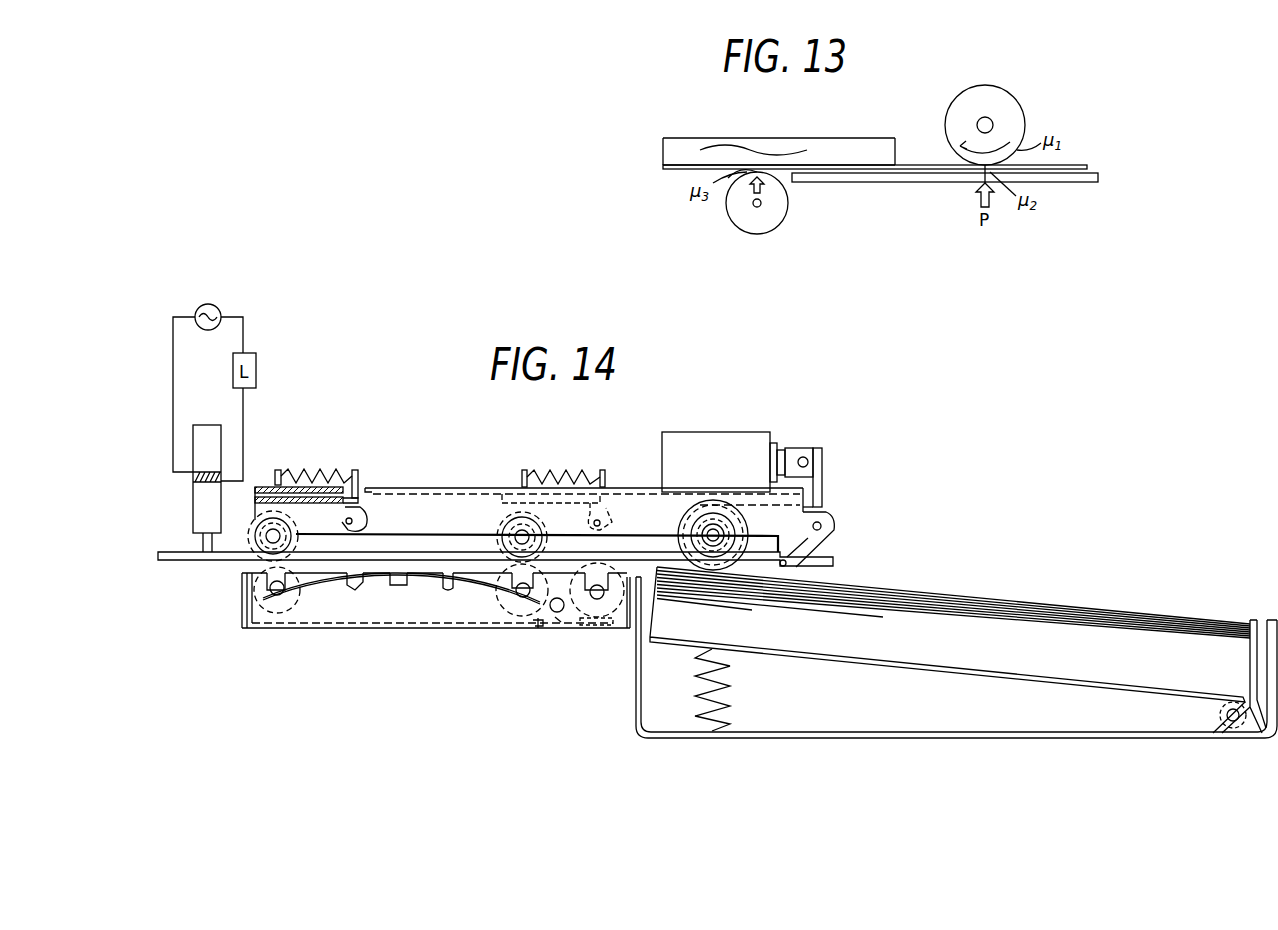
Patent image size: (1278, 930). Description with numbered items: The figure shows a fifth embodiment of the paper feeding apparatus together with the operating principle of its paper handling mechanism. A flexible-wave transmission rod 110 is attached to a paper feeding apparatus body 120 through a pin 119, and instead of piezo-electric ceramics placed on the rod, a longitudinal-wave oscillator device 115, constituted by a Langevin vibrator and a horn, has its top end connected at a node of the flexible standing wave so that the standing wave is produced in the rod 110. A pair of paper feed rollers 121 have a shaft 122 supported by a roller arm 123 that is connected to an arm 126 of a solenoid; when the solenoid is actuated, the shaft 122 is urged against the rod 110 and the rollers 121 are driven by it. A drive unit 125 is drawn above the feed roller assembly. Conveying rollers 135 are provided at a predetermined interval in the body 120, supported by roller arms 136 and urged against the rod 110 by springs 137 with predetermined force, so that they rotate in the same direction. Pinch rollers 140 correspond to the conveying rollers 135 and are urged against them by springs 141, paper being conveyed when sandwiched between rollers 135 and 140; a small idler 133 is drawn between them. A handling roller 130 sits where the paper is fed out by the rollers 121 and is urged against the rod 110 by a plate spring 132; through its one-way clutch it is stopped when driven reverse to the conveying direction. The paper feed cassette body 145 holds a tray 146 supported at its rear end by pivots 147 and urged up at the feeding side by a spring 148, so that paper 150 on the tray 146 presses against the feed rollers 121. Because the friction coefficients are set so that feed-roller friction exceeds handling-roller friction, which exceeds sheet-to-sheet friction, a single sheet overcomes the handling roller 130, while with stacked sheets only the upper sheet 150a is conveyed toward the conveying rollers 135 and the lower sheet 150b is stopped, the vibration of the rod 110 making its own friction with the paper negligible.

In FIG. 13, the flexible-wave transmission rod 110 is at (832, 142).
In FIG. 14, the flexible-wave transmission rod 110 is at (452, 552).
In FIG. 14, the longitudinal-wave oscillator device 115 is at (193, 460).
In FIG. 14, the pin 119 is at (806, 573).
In FIG. 14, the paper feeding apparatus body 120 is at (437, 484).
In FIG. 13, the paper feed rollers 121 is at (1013, 113).
In FIG. 14, the paper feed rollers 121 is at (680, 518).
In FIG. 14, the shaft 122 is at (743, 507).
In FIG. 14, the roller arm 123 is at (683, 510).
In FIG. 14, the drive motor 125 is at (745, 443).
In FIG. 14, the arm 126 is at (822, 496).
In FIG. 13, the handling roller 130 is at (768, 221).
In FIG. 14, the handling roller 130 is at (612, 627).
In FIG. 14, the plate spring 132 is at (575, 623).
In FIG. 14, the idler roller 133 is at (556, 614).
In FIG. 14, the conveying rollers 135 is at (513, 513).
In FIG. 14, the roller arms 136 is at (373, 530).
In FIG. 14, the springs 137 is at (307, 468).
In FIG. 14, the pinch rollers 140 is at (280, 613).
In FIG. 14, the springs 141 is at (323, 590).
In FIG. 14, the paper feed cassette body 145 is at (1078, 738).
In FIG. 14, the tray 146 is at (1252, 620).
In FIG. 14, the pivots 147 is at (1232, 723).
In FIG. 14, the spring 148 is at (727, 703).
In FIG. 14, the paper 150 is at (1008, 602).
In FIG. 13, the upper sheet 150a is at (1073, 165).
In FIG. 13, the lower sheet 150b is at (1066, 183).